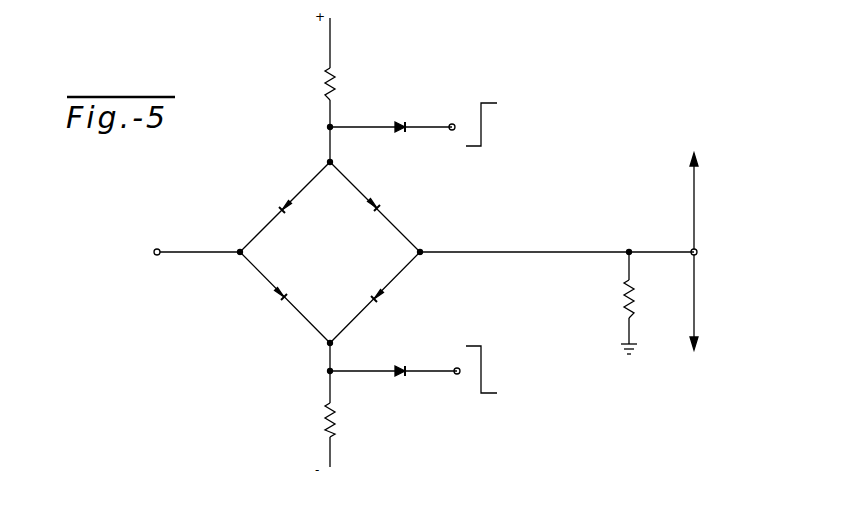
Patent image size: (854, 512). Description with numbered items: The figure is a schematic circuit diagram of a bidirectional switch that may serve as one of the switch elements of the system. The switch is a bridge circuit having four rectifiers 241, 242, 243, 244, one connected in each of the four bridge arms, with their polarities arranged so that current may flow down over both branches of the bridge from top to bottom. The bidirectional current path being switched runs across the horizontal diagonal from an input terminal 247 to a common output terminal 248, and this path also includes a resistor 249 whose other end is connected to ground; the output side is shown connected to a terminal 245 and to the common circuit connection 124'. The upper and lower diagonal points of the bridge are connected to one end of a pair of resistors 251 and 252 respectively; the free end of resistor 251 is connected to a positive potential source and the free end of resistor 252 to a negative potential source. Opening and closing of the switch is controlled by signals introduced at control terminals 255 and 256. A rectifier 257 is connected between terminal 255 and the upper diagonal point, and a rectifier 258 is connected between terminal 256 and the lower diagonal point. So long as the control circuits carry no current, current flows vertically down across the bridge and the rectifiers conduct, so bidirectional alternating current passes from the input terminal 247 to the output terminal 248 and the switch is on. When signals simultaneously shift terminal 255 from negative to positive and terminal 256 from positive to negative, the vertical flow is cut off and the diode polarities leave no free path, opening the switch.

The resistor 251 is at (336, 77).
The resistor 252 is at (337, 415).
The rectifier 257 is at (398, 121).
The rectifier 258 is at (400, 367).
The control terminal 255 is at (451, 131).
The control terminal 256 is at (457, 375).
The rectifier 241 is at (283, 204).
The rectifier 242 is at (377, 204).
The rectifier 243 is at (385, 296).
The rectifier 244 is at (276, 296).
The input terminal 247 is at (157, 245).
The common output terminal 248 is at (422, 251).
The resistor 249 is at (625, 292).
The output terminal 245 is at (696, 254).
The bidirectional bus line 124' is at (732, 251).